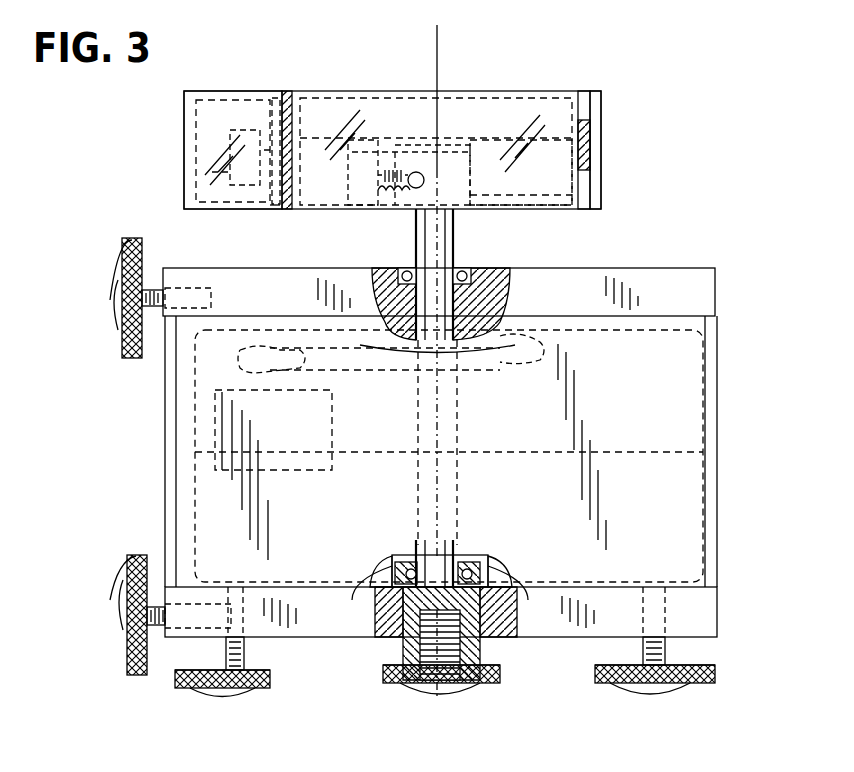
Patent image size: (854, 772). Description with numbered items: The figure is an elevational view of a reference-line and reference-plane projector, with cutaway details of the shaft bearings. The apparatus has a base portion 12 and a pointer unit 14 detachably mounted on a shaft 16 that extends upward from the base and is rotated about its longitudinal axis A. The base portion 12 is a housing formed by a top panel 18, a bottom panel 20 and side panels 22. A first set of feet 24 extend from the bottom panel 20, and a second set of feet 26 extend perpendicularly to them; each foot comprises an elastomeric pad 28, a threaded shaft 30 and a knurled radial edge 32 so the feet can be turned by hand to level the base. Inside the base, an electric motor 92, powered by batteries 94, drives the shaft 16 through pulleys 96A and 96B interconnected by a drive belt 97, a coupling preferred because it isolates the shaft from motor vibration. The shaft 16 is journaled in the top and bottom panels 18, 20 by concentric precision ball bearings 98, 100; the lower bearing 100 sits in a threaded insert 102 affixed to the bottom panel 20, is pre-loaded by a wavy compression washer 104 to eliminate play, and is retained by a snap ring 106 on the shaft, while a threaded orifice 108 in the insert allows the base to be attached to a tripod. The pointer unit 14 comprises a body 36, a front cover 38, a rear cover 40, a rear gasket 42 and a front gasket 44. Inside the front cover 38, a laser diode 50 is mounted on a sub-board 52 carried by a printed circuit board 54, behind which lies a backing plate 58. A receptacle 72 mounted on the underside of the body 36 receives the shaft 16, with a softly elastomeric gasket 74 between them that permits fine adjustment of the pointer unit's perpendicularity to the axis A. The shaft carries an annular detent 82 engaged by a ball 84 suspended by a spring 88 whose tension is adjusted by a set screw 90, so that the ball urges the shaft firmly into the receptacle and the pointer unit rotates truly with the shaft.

The base portion 12 is at (762, 244).
The pointer unit 14 is at (720, 86).
The shaft 16 is at (445, 232).
The top panel 18 is at (686, 290).
The bottom panel 20 is at (718, 604).
The side panels 22 is at (165, 400).
The first set of feet 24 is at (282, 688).
The second set of feet 26 is at (127, 668).
The elastomeric pad 28 is at (120, 300).
The threaded shaft 30 is at (150, 290).
The radial edge 32 is at (124, 240).
The body 36 is at (532, 90).
The front cover 38 is at (184, 110).
The rear cover 40 is at (595, 91).
The rear gasket 42 is at (580, 91).
The front gasket 44 is at (288, 91).
The laser diode 50 is at (196, 102).
The sub-board 52 is at (240, 132).
The printed circuit board 54 is at (272, 212).
The backing plate 58 is at (278, 96).
The receptacle 72 is at (572, 185).
The gasket 74 is at (602, 138).
The annular detent 82 is at (470, 150).
The ball 84 is at (412, 140).
The spring 88 is at (398, 140).
The set screw 90 is at (372, 140).
The electric motor 92 is at (215, 465).
The batteries 94 is at (200, 438).
The pulley 96A is at (260, 345).
The pulley 96B is at (548, 335).
The drive belt 97 is at (556, 366).
The ball bearing 98 is at (418, 268).
The ball bearing 100 is at (400, 555).
The threaded insert 102 is at (410, 682).
The wavy compression washer 104 is at (392, 608).
The snap ring 106 is at (462, 570).
The threaded orifice 108 is at (445, 690).
The longitudinal axis A is at (444, 66).